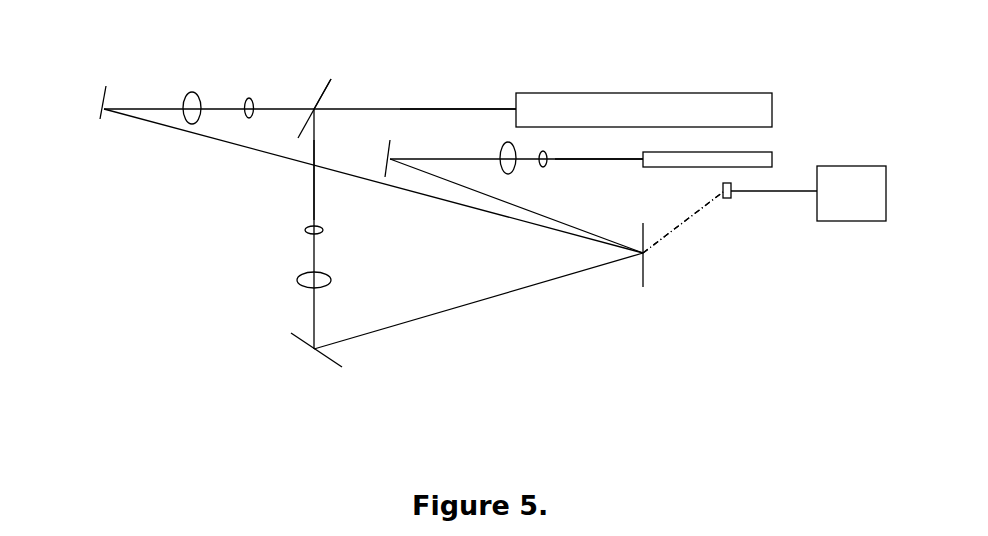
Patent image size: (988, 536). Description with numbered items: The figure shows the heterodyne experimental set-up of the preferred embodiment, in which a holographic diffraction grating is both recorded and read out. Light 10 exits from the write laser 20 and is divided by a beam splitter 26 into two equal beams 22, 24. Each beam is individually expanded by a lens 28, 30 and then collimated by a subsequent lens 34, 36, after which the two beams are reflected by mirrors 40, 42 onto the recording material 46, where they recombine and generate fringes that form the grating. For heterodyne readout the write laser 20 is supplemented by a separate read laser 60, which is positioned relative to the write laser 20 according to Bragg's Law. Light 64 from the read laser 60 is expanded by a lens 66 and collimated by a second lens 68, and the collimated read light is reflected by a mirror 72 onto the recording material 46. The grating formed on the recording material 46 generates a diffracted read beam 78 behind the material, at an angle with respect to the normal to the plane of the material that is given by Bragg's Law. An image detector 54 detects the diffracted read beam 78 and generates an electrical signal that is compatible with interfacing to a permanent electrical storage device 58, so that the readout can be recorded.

The light 10 is at (498, 97).
The write laser 20 is at (660, 84).
The beam 22 is at (288, 100).
The beam 24 is at (307, 188).
The beam splitter 26 is at (342, 60).
The lens 28 is at (238, 90).
The lens 30 is at (333, 229).
The lens 34 is at (178, 86).
The lens 36 is at (337, 283).
The mirror 40 is at (93, 97).
The mirror 42 is at (297, 355).
The recording material 46 is at (645, 302).
The image detector 54 is at (733, 212).
The permanent electrical storage device 58 is at (855, 227).
The read laser 60 is at (778, 155).
The light 64 is at (615, 167).
The lens 66 is at (553, 170).
The second lens 68 is at (490, 145).
The mirror 72 is at (380, 153).
The diffracted read beam 78 is at (675, 255).